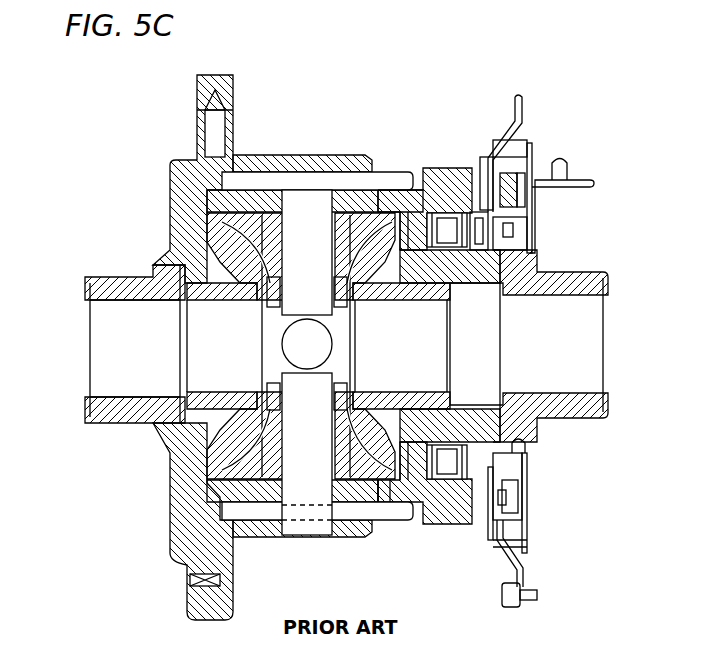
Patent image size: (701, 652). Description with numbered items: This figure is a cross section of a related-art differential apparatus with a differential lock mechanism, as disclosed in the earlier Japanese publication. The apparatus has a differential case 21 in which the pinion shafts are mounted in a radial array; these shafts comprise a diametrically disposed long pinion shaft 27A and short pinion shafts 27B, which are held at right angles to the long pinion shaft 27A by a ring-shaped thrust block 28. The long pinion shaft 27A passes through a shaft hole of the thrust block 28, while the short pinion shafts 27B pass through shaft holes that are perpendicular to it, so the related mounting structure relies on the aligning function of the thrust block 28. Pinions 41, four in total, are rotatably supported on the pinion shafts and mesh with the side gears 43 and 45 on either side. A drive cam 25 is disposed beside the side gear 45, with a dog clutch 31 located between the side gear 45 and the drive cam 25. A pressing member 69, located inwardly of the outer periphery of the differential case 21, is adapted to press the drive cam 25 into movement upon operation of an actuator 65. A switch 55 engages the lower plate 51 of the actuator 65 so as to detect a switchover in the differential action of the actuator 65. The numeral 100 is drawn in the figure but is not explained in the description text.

The differential case 21 is at (268, 160).
The drive cam 25 is at (437, 214).
The long pinion shaft 27A is at (290, 338).
The short pinion shaft 27B is at (297, 156).
The thrust block 28 is at (270, 388).
The dog clutch 31 is at (398, 204).
The pinion 41 is at (328, 242).
The side gear 43 is at (213, 253).
The side gear 45 is at (394, 480).
The lower plate 51 is at (498, 560).
The switch 55 is at (537, 592).
The actuator 65 is at (538, 497).
The pressing member 69 is at (500, 160).
The pinion shaft pin 100 is at (350, 185).